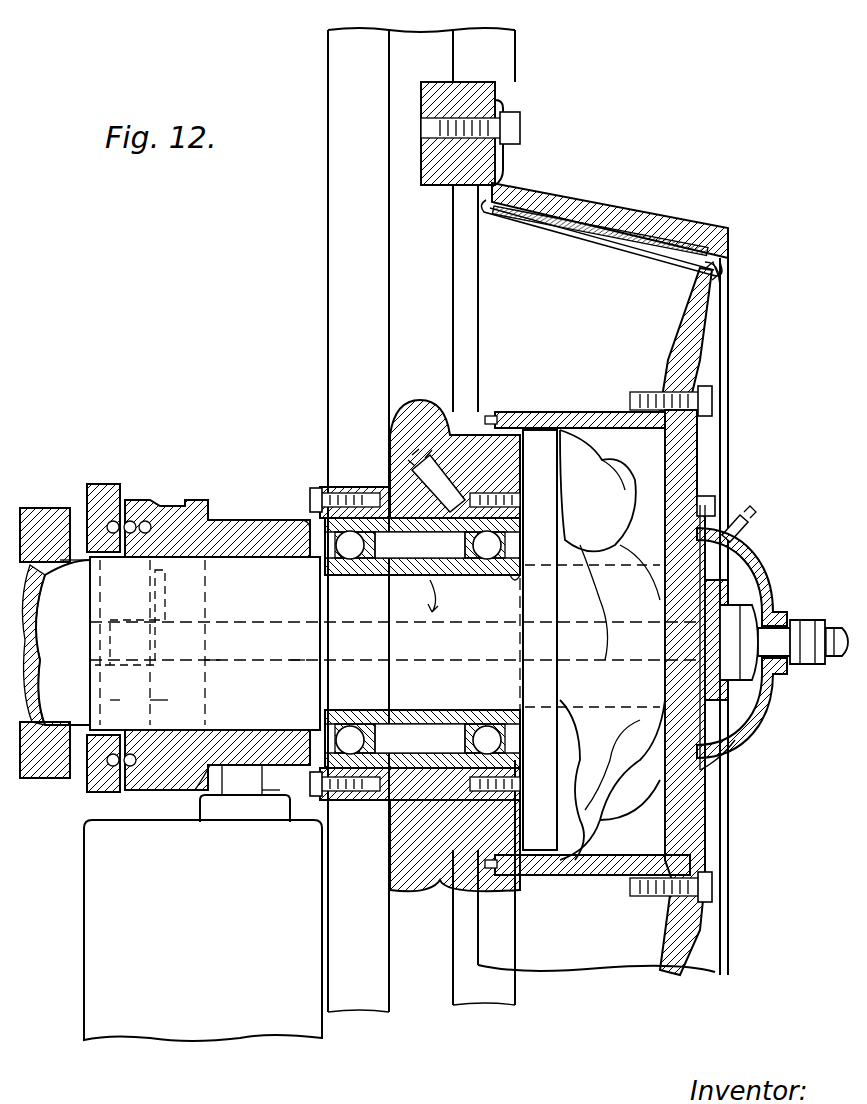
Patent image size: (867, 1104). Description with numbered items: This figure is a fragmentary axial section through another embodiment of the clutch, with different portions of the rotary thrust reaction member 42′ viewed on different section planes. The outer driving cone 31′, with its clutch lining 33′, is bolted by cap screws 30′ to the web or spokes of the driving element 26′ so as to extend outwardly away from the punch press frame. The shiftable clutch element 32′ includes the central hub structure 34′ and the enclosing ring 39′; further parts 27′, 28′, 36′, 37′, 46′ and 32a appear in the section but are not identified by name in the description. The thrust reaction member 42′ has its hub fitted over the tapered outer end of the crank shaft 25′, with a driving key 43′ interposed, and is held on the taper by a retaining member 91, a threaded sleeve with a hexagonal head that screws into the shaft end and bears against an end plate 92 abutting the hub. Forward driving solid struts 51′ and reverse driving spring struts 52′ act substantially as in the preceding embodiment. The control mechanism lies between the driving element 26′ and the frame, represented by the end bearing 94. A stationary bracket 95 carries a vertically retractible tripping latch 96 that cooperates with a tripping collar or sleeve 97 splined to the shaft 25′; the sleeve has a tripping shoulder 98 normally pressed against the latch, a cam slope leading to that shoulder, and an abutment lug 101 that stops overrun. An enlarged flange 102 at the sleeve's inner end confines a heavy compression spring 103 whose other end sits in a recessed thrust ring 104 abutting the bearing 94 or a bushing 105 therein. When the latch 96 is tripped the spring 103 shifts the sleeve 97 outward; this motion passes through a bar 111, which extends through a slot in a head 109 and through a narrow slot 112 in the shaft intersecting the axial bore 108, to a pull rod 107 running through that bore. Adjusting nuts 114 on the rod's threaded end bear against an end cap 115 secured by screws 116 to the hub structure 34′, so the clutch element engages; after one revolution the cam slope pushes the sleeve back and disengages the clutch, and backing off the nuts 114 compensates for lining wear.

The driving element 26′ is at (395, 44).
The cap screws 30′ is at (520, 128).
The outer driving cone 31′ is at (608, 215).
The clutch lining 33′ is at (556, 230).
The packing 32a is at (636, 254).
The shiftable clutch element 32′ is at (712, 352).
The bracket 37′ is at (680, 322).
The bolt 36′ is at (713, 400).
The central hub structure 34′ is at (690, 446).
The enclosing ring 39′ is at (512, 416).
The housing 27′ is at (418, 450).
The bearing 28′ is at (352, 728).
The driving key 43′ is at (560, 578).
The thrust reaction member 42′ is at (540, 636).
The forward driving solid struts 51′ is at (604, 445).
The plate 46′ is at (520, 862).
The screws 116 is at (715, 506).
The reverse driving spring struts 52′ is at (745, 545).
The retaining member 91 is at (745, 598).
The end plate 92 is at (724, 705).
The adjusting nuts 114 is at (805, 665).
The end cap 115 is at (738, 738).
The crank shaft 25′ is at (171, 643).
The end bearing 94 is at (35, 515).
The recessed thrust ring 104 is at (102, 490).
The enlarged flange or housing portion 102 is at (165, 508).
The tripping collar or sleeve 97 is at (238, 524).
The compression spring 103 is at (135, 535).
The bushing 105 is at (65, 558).
The head 109 is at (95, 665).
The narrow slot 112 is at (118, 700).
The bar 111 is at (180, 701).
The pull rod 107 is at (240, 655).
The bore 108 is at (300, 660).
The tripping latch 96 is at (252, 800).
The tripping shoulder 98 is at (200, 792).
The abutment shoulder or lug 101 is at (266, 800).
The stationary bracket 95 is at (112, 938).